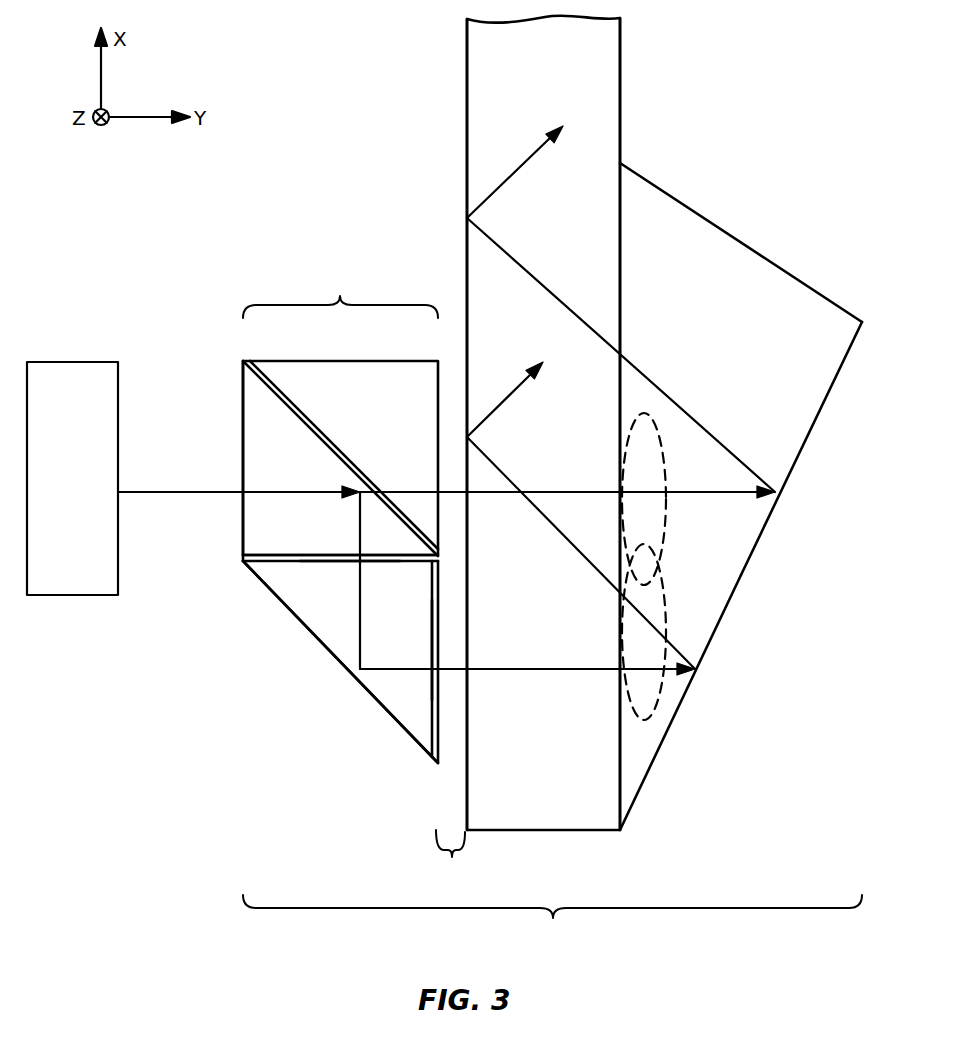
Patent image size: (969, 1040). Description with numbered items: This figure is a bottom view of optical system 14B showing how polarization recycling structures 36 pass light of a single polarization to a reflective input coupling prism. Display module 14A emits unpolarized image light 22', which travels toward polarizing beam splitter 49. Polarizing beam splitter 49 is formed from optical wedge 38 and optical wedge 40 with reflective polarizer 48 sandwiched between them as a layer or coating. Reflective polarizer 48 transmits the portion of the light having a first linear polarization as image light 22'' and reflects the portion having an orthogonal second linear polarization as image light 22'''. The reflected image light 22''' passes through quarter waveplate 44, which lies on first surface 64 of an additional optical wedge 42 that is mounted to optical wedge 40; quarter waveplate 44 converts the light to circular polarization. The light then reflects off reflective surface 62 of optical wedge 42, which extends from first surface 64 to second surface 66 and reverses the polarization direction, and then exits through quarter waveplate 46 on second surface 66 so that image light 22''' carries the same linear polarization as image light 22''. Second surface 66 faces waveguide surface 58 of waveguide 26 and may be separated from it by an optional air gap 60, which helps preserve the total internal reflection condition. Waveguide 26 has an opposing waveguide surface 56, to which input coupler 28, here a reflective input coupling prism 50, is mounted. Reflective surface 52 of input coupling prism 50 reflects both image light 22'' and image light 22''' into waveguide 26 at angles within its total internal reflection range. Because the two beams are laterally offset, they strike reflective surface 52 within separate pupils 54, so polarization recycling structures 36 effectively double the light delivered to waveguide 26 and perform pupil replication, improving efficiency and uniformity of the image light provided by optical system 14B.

The display module 14A is at (77, 600).
The optical system 14B is at (552, 923).
The unpolarized image light 22' is at (239, 522).
The image light having a first linear polarization 22'' is at (567, 345).
The image light having a second linear polarization 22''' is at (527, 518).
The waveguide 26 is at (607, 126).
The input coupler 28 is at (750, 233).
The polarization recycling structures 36 is at (340, 292).
The optical wedge 38 is at (396, 373).
The optical wedge 40 is at (243, 440).
The optical wedge 42 is at (326, 646).
The quarter waveplate 44 is at (252, 565).
The quarter waveplate 46 is at (432, 749).
The reflective polarizer 48 is at (288, 398).
The polarizing beam splitter 49 is at (204, 384).
The input coupling prism 50 is at (810, 414).
The reflective surface 52 is at (770, 545).
The pupils 54 is at (672, 540).
The waveguide surface 56 is at (631, 268).
The waveguide surface 58 is at (478, 104).
The air gap 60 is at (451, 855).
The reflective surface 62 is at (339, 689).
The first surface 64 is at (336, 577).
The second surface 66 is at (416, 634).